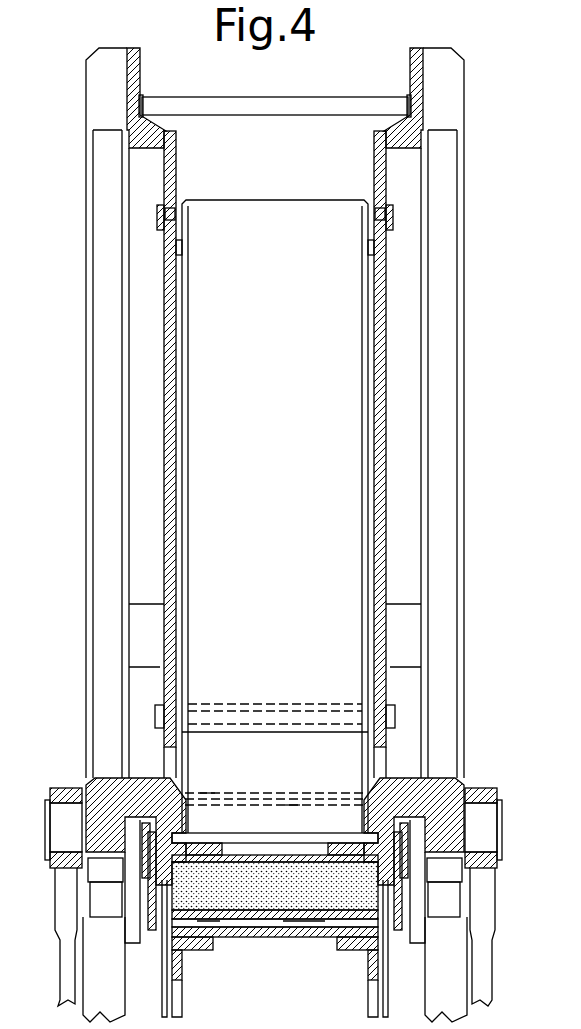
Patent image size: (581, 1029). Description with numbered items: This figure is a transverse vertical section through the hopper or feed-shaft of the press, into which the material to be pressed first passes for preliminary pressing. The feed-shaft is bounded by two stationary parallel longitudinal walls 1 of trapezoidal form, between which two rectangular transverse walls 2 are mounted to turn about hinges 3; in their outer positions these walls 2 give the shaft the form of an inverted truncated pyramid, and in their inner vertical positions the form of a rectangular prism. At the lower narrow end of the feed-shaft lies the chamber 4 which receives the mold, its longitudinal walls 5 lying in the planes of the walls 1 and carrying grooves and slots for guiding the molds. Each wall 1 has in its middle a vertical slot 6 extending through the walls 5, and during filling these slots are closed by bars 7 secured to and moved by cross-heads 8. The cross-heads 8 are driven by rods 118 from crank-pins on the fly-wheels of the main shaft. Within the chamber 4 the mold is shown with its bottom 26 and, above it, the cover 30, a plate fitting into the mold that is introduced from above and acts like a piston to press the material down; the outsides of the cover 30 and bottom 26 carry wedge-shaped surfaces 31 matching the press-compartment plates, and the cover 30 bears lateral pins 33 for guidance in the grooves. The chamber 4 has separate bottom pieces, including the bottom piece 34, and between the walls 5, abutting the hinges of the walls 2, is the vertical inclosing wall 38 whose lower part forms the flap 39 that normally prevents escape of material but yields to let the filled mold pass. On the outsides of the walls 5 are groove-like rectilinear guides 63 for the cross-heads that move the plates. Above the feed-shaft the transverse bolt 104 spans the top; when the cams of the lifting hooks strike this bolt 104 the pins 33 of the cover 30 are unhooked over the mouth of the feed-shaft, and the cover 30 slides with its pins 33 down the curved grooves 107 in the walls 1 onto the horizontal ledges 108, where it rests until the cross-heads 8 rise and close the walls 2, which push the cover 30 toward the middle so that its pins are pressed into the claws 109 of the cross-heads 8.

The longitudinal wall 1 is at (164, 448).
The transverse wall 2 is at (275, 516).
The hinge 3 is at (270, 716).
The chamber 4 is at (275, 783).
The longitudinal wall of the chamber 5 is at (160, 730).
The vertical slot 6 is at (168, 134).
The bar 7 is at (164, 978).
The cross-head 8 is at (112, 780).
The bottom 26 is at (278, 921).
The cover 30 is at (268, 856).
The wedge-shaped surface 31 is at (205, 846).
The projecting pin 33 is at (182, 838).
The bottom piece 34 is at (248, 937).
The inclosing wall 38 is at (221, 779).
The flap 39 is at (292, 812).
The rectilinear guide 63 is at (142, 842).
The transverse bolt 104 is at (285, 108).
The curved groove 107 is at (160, 212).
The ledge 108 is at (182, 250).
The claw 109 is at (188, 866).
The rod 118 is at (68, 977).